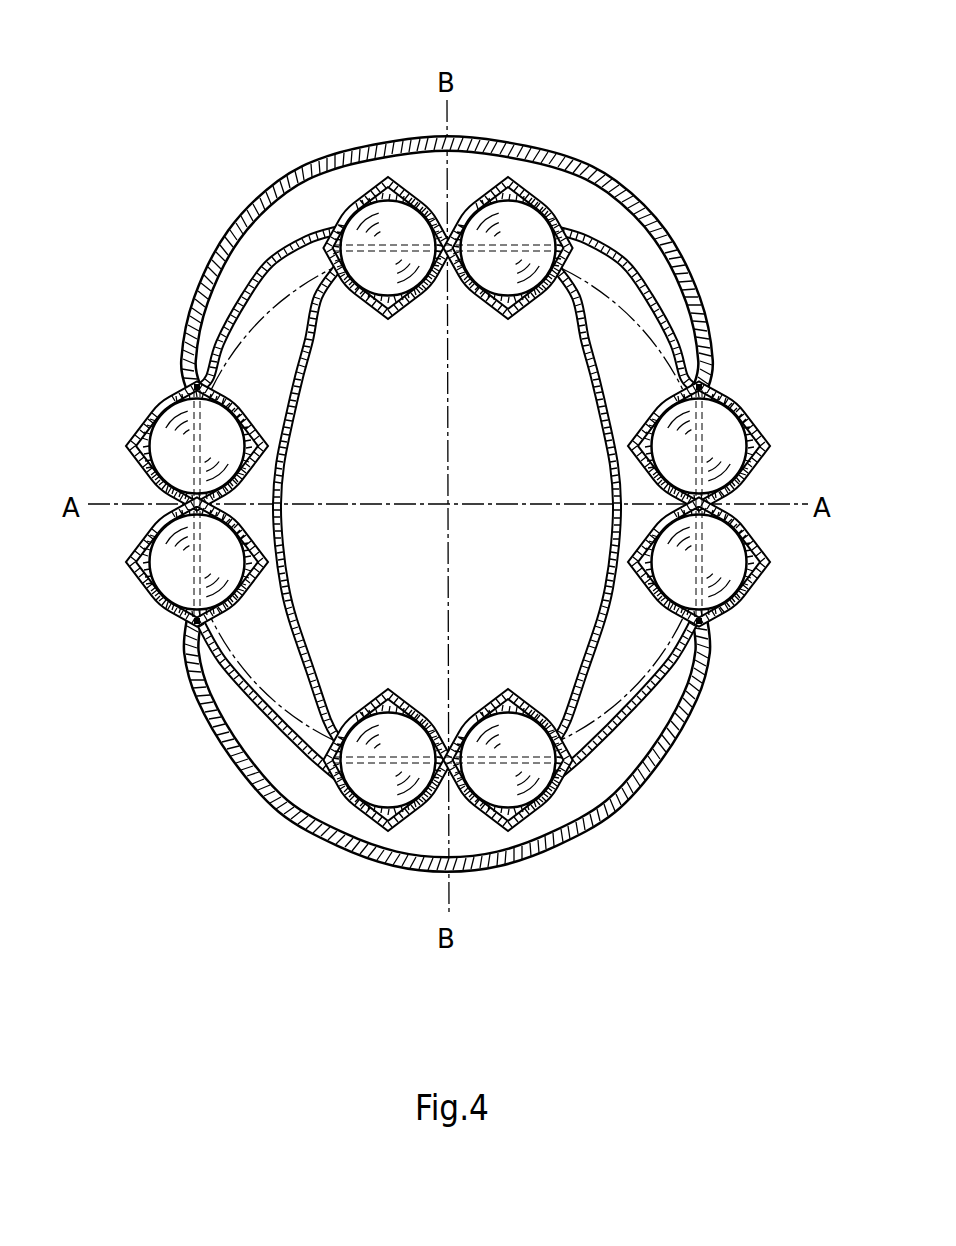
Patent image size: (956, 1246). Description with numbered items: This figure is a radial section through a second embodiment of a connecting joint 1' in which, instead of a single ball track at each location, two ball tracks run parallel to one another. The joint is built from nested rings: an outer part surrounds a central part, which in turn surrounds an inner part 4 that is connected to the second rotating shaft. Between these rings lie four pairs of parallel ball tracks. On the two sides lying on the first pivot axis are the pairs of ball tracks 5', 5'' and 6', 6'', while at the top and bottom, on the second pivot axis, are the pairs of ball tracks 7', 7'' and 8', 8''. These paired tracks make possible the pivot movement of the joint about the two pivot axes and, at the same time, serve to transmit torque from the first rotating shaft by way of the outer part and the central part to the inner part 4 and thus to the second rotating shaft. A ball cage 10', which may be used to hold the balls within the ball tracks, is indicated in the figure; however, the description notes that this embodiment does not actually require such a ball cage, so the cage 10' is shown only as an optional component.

The rolling bearing 1' is at (448, 461).
The inner ring 4 is at (607, 436).
The ball track 5' is at (163, 422).
The ball track 5'' is at (160, 577).
The ball track 6' is at (731, 430).
The ball track 6'' is at (734, 585).
The ball track 7' is at (388, 710).
The ball track 7'' is at (508, 710).
The ball track 8' is at (388, 297).
The ball track 8'' is at (508, 297).
The ball cage 10' is at (448, 504).